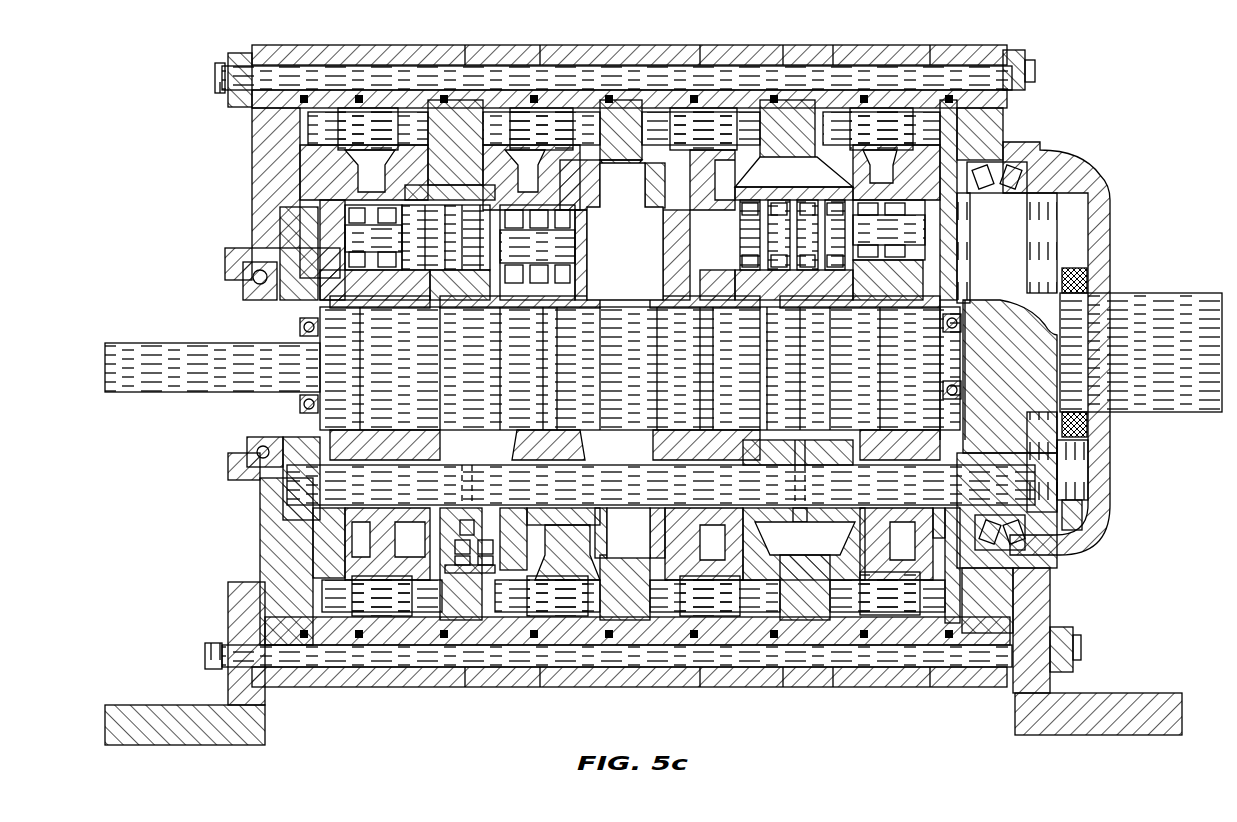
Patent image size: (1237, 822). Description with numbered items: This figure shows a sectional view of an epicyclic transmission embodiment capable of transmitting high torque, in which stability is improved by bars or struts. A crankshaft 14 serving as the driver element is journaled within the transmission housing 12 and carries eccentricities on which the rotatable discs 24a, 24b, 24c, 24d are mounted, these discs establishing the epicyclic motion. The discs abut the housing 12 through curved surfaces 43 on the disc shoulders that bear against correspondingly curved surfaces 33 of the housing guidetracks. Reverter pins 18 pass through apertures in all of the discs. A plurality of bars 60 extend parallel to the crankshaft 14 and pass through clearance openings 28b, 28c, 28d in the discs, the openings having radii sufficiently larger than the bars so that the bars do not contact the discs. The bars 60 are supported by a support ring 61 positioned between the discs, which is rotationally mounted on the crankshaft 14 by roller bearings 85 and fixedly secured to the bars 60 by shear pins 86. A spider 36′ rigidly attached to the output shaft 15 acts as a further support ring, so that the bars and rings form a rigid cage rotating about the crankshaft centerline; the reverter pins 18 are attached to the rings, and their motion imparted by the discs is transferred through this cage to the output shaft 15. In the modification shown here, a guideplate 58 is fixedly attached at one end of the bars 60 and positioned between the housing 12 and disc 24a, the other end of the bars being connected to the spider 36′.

The transmission housing 12 is at (262, 543).
The crankshaft 14 is at (170, 355).
The output shaft 15 is at (1183, 315).
The reverter pins 18 is at (345, 240).
The disc 24a is at (388, 530).
The disc 24b is at (562, 540).
The disc 24c is at (732, 562).
The disc 24d is at (912, 525).
The clearance opening 28b is at (550, 512).
The clearance opening 28c is at (757, 520).
The clearance opening 28d is at (890, 520).
The curved surfaces of guidetracks 33 is at (735, 170).
The spider 36′ is at (1095, 515).
The curved surfaces of disc shoulders 43 is at (720, 187).
The guideplate 58 is at (300, 425).
The bars or struts 60 is at (722, 484).
The support ring 61 is at (455, 520).
The roller bearings 85 is at (478, 562).
The shear pins 86 is at (480, 525).